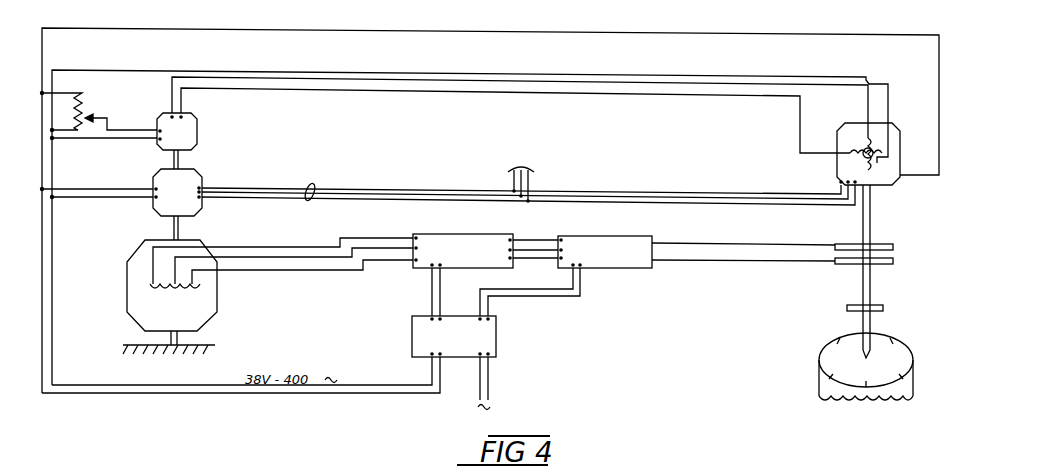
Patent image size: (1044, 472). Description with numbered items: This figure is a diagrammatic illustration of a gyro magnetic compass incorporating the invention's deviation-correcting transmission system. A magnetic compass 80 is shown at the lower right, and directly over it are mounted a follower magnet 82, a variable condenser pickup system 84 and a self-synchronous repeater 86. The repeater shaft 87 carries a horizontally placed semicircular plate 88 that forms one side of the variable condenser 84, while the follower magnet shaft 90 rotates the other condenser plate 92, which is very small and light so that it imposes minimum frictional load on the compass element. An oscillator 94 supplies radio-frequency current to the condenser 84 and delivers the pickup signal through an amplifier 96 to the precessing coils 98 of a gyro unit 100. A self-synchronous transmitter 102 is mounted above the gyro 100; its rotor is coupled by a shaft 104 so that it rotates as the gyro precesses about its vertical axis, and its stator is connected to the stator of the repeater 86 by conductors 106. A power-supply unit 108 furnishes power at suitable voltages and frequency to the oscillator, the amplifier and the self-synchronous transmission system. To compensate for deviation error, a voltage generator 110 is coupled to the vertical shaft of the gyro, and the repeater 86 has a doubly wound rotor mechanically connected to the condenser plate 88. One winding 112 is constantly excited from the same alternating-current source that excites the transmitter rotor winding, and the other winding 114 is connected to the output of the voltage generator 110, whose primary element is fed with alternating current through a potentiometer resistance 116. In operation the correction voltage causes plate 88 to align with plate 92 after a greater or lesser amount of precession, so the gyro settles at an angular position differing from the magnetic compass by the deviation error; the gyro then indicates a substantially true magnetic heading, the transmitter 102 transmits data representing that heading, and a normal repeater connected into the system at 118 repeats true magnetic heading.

The magnetic compass 80 is at (904, 356).
The follower magnet 82 is at (885, 308).
The variable condenser pickup system 84 is at (897, 238).
The self-synchronous repeater 86 is at (900, 136).
The repeater shaft 87 is at (874, 215).
The semicircular plate 88 is at (847, 243).
The follower magnet shaft 90 is at (858, 295).
The condenser plate 92 is at (888, 266).
The oscillator 94 is at (636, 262).
The amplifier 96 is at (450, 236).
The precessing coils 98 is at (150, 287).
The gyro unit 100 is at (205, 303).
The self-synchronous transmitter 102 is at (195, 180).
The shaft 104 is at (181, 228).
The conductors 106 is at (316, 184).
The power-supply unit 108 is at (497, 337).
The voltage generator 110 is at (189, 138).
The winding 112 is at (862, 136).
The winding 114 is at (856, 150).
The potentiometer resistance 116 is at (94, 106).
The normal repeater unit connection 118 is at (538, 168).